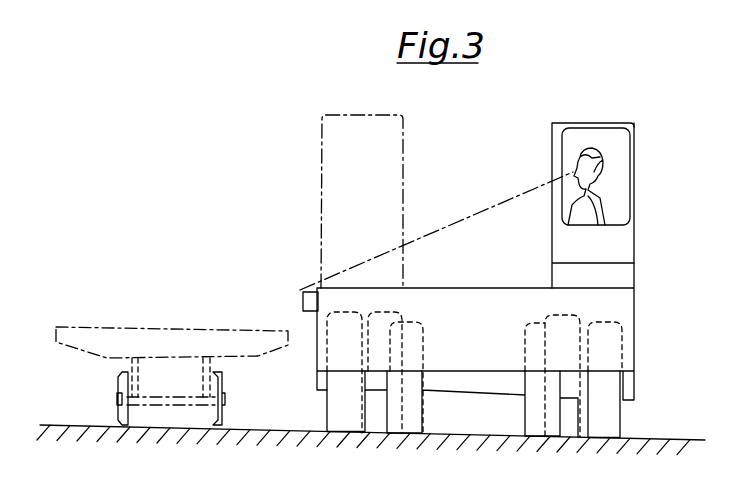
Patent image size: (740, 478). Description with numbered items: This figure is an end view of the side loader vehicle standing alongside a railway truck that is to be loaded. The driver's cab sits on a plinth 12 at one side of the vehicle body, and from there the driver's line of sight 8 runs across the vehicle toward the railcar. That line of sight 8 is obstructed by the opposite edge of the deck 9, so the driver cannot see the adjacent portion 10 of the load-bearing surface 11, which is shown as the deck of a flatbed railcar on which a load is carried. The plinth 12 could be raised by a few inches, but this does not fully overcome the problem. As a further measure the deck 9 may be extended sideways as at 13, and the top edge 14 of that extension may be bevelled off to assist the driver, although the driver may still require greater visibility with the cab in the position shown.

The line of sight 8 is at (488, 209).
The deck 9 is at (484, 288).
The adjacent portion 10 is at (272, 340).
The load-bearing surface 11 is at (225, 327).
The plinth 12 is at (625, 281).
The sideways extension 13 is at (303, 299).
The top edge 14 is at (317, 288).